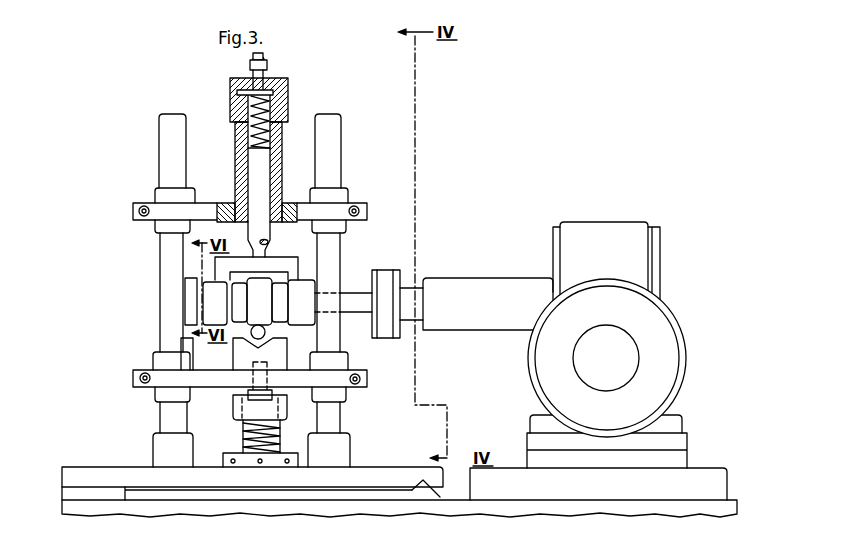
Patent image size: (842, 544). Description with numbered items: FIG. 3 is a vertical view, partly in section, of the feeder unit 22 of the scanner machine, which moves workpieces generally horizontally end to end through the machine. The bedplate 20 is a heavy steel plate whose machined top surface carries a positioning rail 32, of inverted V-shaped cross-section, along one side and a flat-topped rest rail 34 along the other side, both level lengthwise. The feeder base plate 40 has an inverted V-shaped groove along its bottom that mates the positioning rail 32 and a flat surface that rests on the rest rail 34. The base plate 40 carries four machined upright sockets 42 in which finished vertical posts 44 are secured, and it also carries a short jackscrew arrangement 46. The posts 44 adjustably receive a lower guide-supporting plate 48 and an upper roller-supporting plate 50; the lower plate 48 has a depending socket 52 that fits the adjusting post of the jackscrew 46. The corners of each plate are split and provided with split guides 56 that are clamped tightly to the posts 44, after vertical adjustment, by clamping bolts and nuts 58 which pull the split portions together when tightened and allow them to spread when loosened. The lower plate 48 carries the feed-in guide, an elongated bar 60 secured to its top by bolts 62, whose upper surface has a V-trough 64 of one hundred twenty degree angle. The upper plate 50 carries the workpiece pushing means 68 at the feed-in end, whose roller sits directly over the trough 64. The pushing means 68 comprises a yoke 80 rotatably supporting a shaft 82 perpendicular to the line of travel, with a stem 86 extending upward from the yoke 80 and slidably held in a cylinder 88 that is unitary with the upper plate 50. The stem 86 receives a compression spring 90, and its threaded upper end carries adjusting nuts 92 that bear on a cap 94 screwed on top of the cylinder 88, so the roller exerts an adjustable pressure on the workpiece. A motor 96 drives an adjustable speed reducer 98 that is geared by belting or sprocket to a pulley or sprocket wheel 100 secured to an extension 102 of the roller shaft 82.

The bedplate 20 is at (62, 503).
The feeder unit 22 is at (142, 139).
The positioning rail 32 is at (439, 494).
The rest rail 34 is at (62, 492).
The base plate 40 is at (106, 466).
The upright sockets 42 is at (153, 454).
The vertical posts 44 is at (159, 153).
The jackscrew arrangement 46 is at (279, 438).
The lower guide-supporting plate 48 is at (222, 373).
The upper roller-supporting plate 50 is at (214, 195).
The depending socket 52 is at (233, 405).
The split guides 56 is at (160, 196).
The clamping bolts and nuts 58 is at (133, 212).
The elongated bar 60 is at (284, 352).
The bolts 62 is at (270, 392).
The V-trough 64 is at (268, 333).
The workpiece pushing means 68 is at (303, 141).
The yoke 80 is at (241, 256).
The shaft 82 is at (304, 282).
The stem 86 is at (263, 197).
The cylinder 88 is at (240, 137).
The compression spring 90 is at (245, 122).
The adjusting nuts 92 is at (267, 62).
The cap 94 is at (288, 90).
The motor 96 is at (674, 378).
The adjustable speed reducer 98 is at (571, 226).
The pulley or sprocket wheel 100 is at (371, 272).
The shaft extension 102 is at (367, 313).